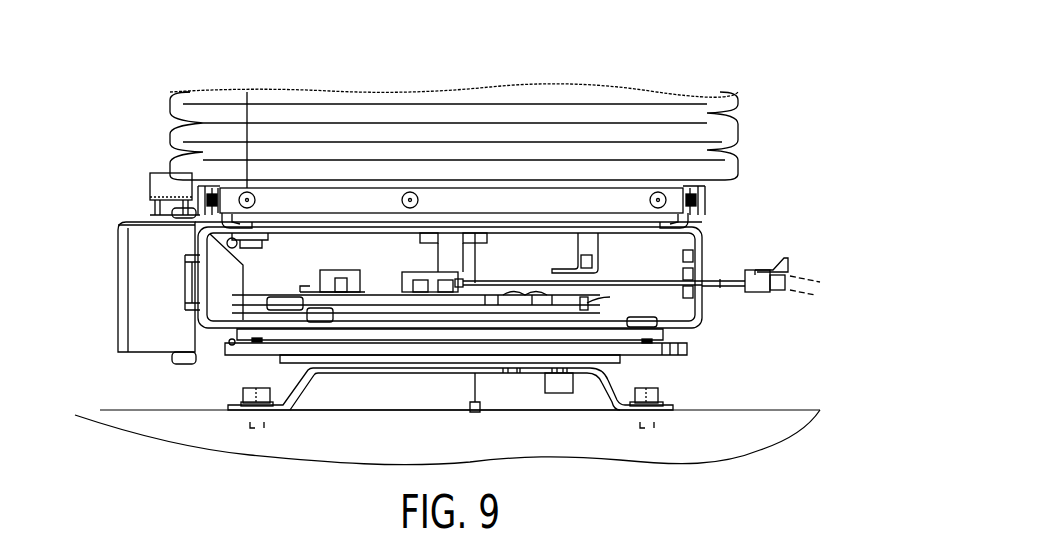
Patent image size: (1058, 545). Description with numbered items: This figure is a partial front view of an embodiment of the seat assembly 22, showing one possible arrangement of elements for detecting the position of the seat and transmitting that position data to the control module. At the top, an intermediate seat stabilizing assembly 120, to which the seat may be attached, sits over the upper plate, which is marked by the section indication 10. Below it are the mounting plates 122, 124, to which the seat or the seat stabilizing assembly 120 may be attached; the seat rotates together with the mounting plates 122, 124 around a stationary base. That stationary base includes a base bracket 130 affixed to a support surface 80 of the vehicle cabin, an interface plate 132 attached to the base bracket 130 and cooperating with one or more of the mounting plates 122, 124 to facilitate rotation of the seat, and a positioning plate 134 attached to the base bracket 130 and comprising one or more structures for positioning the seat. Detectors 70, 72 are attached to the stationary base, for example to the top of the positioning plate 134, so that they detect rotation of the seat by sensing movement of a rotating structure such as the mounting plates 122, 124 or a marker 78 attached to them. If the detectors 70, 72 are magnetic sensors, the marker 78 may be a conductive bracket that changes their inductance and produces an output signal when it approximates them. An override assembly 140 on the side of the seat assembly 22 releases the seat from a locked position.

The seat assembly 22 is at (727, 53).
The seat stabilizing assembly 120 is at (172, 122).
The section line / upper plate 10 is at (481, 198).
The override assembly 140 is at (118, 298).
The mounting plate 122 is at (703, 240).
The detector 70 is at (333, 272).
The detector 72 is at (417, 272).
The marker 78 is at (576, 258).
The positioning plate 134 is at (594, 304).
The mounting plate 124 is at (665, 333).
The interface plate 132 is at (648, 356).
The base bracket 130 is at (297, 388).
The support surface 80 is at (106, 410).